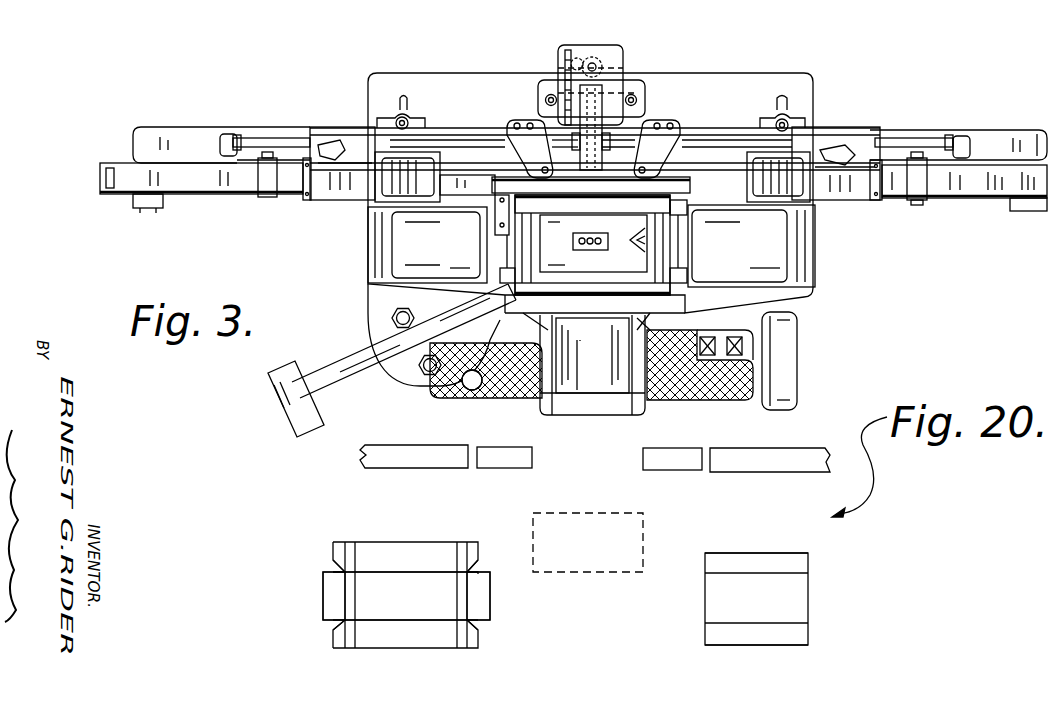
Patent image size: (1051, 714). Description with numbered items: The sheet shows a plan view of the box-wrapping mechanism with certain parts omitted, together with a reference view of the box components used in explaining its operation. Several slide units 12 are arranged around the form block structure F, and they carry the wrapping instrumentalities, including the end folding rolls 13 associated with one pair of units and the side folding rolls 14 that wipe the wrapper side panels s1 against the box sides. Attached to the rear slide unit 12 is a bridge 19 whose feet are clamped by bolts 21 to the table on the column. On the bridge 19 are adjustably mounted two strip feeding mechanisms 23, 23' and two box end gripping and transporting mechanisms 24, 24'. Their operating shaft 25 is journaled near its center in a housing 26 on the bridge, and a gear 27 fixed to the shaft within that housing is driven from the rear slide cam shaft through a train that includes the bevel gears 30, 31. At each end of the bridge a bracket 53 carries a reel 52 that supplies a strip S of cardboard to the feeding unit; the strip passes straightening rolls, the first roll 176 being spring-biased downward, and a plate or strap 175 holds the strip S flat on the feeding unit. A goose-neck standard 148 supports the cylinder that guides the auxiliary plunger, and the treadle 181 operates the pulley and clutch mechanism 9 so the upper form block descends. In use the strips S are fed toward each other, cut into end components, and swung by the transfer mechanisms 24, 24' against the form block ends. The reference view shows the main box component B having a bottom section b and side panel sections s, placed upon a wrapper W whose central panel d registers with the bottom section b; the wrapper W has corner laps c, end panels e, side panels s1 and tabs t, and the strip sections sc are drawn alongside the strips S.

In FIG. 3, the pulley and clutch mechanism 9 is at (782, 347).
In FIG. 3, the slide unit 12 is at (623, 73).
In FIG. 3, the end folding roll 13 is at (524, 249).
In FIG. 3, the side folding roll 14 is at (587, 283).
In FIG. 3, the bridge 19 is at (467, 120).
In FIG. 3, the bolt 21 is at (402, 117).
In FIG. 3, the strip feeding mechanism 23 is at (375, 150).
In FIG. 3, the strip feeding mechanism 23' is at (813, 146).
In FIG. 3, the box end gripping and transporting mechanism 24 is at (523, 128).
In FIG. 3, the box end gripping and transporting mechanism 24' is at (661, 128).
In FIG. 3, the operating shaft 25 is at (267, 138).
In FIG. 3, the housing 26 is at (585, 108).
In FIG. 3, the gear 27 is at (582, 148).
In FIG. 3, the bevel gear 30 is at (596, 60).
In FIG. 3, the bevel gear 31 is at (580, 57).
In FIG. 3, the reel 52 is at (123, 195).
In FIG. 3, the bracket 53 is at (181, 138).
In FIG. 3, the goose-neck standard 148 is at (318, 390).
In FIG. 3, the plate or strap 175 is at (306, 185).
In FIG. 3, the roll 176 is at (263, 180).
In FIG. 3, the treadle 181 is at (713, 337).
In FIG. 3, the strip S is at (205, 180).
In FIG. 3, the form block structure F is at (592, 383).
In FIG. 3, the wrapper W is at (378, 592).
In FIG. 3, the side panel section s is at (418, 458).
In FIG. 20, the side panel section s is at (743, 563).
In FIG. 3, the strip section sc is at (494, 462).
In FIG. 3, the wrapper side panel s1 is at (412, 556).
In FIG. 3, the corner lap c is at (337, 554).
In FIG. 3, the tab t is at (350, 558).
In FIG. 3, the end panel e is at (334, 586).
In FIG. 3, the central panel d is at (375, 606).
In FIG. 20, the main box component B is at (797, 600).
In FIG. 20, the bottom section b is at (800, 612).